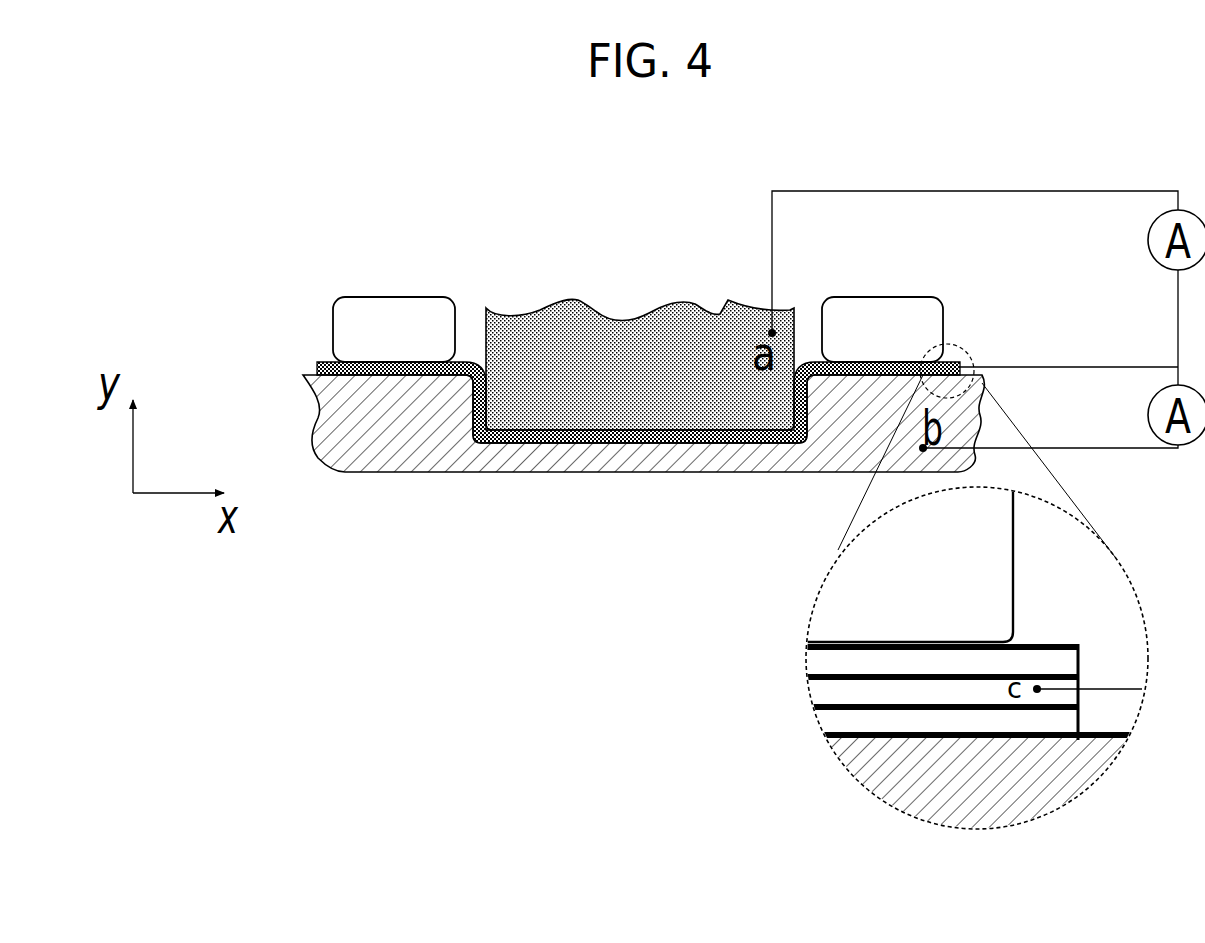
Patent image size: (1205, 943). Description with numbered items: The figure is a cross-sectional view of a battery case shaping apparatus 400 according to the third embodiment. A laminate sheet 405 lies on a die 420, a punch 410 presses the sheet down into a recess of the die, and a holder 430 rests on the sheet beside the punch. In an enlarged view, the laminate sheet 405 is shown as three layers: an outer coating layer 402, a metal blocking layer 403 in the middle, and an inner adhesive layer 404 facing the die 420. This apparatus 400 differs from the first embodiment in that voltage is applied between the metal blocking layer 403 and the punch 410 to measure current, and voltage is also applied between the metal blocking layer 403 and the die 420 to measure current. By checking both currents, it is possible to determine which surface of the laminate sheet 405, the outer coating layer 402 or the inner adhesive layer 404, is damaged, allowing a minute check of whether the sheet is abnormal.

The battery case shaping apparatus 400 is at (672, 479).
The outer coating layer 402 is at (818, 660).
The metal blocking layer 403 is at (826, 690).
The inner adhesive layer 404 is at (828, 722).
The laminate sheet 405 is at (465, 356).
The punch 410 is at (583, 326).
The die 420 is at (984, 417).
The holder 430 is at (951, 318).